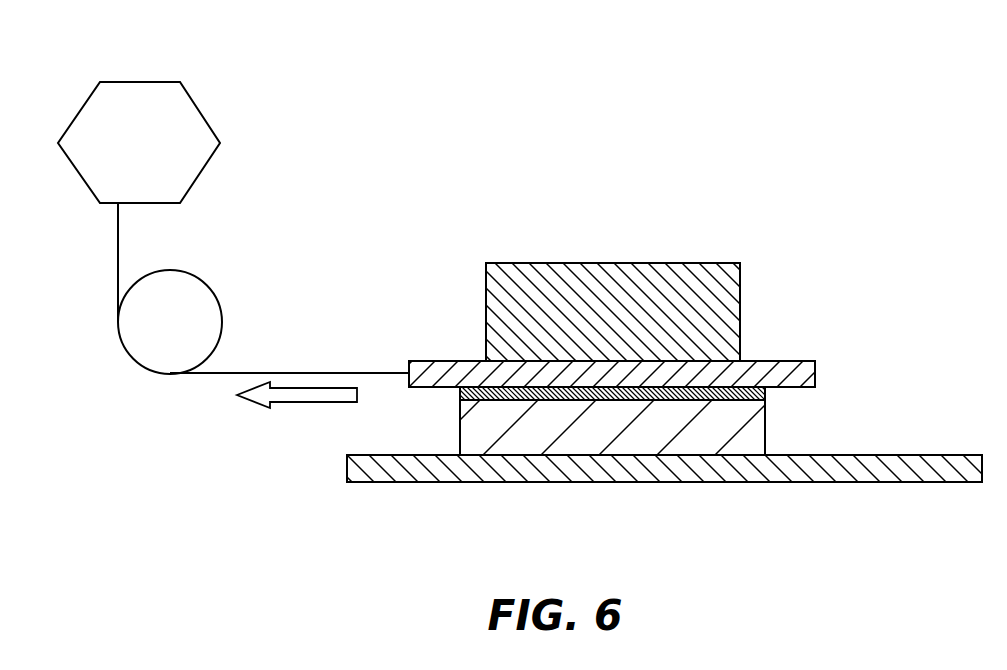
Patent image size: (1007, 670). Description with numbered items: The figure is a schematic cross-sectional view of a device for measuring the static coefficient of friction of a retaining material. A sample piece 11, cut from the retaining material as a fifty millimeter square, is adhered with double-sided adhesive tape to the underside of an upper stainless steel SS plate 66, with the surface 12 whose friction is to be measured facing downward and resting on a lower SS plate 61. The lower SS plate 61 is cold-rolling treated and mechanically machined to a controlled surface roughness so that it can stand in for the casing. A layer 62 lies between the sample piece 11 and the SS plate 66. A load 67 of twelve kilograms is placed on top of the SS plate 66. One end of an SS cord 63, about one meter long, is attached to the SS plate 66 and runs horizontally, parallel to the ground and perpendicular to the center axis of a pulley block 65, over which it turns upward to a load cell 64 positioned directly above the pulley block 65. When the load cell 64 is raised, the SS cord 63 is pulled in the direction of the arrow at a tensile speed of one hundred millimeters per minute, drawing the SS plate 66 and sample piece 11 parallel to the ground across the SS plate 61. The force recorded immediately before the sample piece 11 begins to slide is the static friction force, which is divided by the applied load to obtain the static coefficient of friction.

The load cell 64 is at (133, 93).
The pulley block 65 is at (202, 297).
The SS cord 63 is at (328, 372).
The load 67 is at (730, 312).
The SS plate 66 is at (812, 373).
The release layer 62 is at (758, 393).
The sample piece 11 is at (472, 430).
The surface 12 is at (575, 458).
The SS plate 61 is at (918, 481).